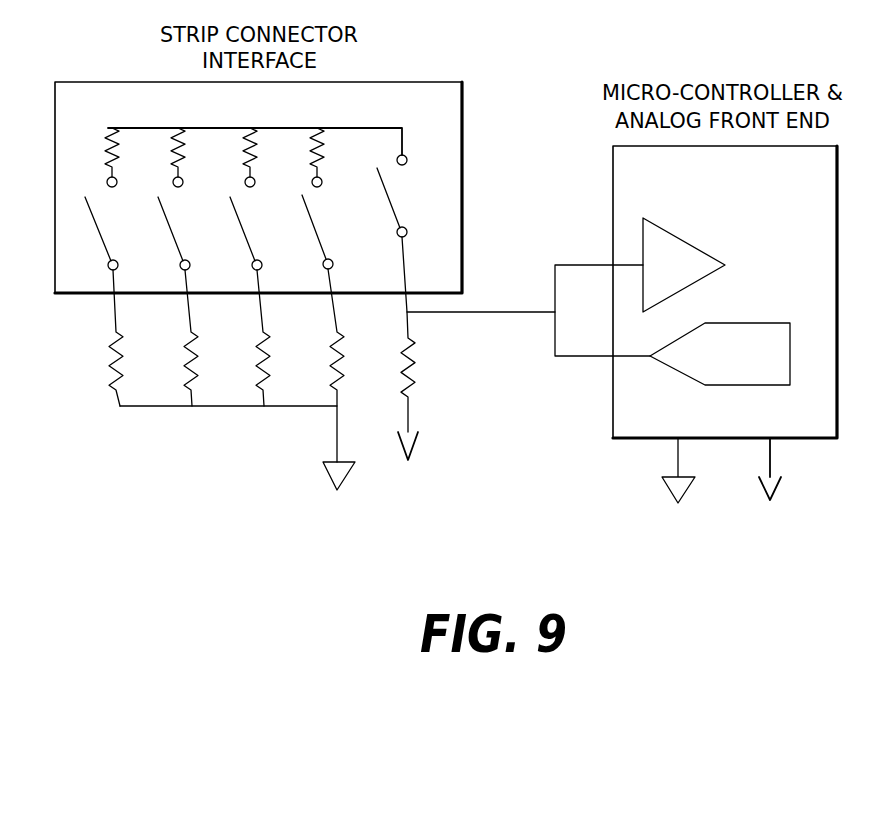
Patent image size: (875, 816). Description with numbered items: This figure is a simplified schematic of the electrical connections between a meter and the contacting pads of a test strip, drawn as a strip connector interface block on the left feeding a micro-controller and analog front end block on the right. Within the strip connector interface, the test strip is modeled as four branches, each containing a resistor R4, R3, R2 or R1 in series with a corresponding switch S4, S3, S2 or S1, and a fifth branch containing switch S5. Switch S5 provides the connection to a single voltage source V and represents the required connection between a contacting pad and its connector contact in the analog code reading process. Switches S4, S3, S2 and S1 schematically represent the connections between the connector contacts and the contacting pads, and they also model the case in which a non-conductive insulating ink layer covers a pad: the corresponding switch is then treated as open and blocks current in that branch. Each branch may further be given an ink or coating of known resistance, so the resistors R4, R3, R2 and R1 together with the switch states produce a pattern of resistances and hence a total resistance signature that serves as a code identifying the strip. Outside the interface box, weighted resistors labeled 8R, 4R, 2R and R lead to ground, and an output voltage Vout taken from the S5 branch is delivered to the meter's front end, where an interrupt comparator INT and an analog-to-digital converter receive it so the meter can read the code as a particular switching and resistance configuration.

The resistor R4 is at (127, 157).
The resistor R3 is at (193, 157).
The resistor R2 is at (266, 157).
The resistor R1 is at (331, 157).
The switch S5 is at (403, 196).
The switch S4 is at (115, 233).
The switch S3 is at (188, 233).
The switch S2 is at (259, 233).
The switch S1 is at (331, 232).
The resistor 8R is at (90, 338).
The resistor 4R is at (167, 338).
The resistor 2R is at (242, 338).
The resistor R is at (368, 334).
The output voltage line Vout is at (481, 325).
The interrupt comparator INT is at (684, 265).